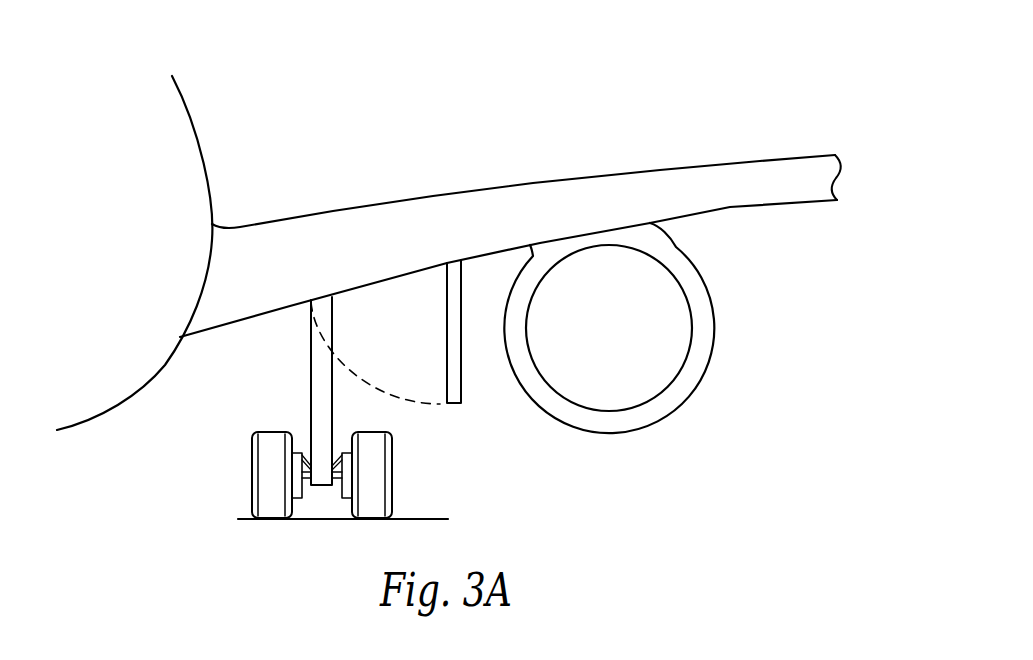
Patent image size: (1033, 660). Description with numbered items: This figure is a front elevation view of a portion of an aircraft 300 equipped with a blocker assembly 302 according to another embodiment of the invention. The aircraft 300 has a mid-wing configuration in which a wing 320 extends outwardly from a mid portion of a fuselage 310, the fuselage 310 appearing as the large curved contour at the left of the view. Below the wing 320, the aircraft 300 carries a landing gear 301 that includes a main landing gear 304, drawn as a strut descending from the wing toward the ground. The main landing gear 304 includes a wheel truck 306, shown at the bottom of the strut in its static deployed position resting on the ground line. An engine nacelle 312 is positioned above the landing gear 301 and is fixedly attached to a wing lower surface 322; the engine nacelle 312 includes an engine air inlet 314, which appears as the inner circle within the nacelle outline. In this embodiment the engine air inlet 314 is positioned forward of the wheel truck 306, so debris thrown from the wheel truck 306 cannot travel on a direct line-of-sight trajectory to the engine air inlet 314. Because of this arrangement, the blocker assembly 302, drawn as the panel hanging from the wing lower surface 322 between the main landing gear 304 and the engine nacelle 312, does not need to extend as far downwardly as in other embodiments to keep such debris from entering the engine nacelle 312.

The aircraft 300 is at (449, 230).
The landing gear 301 is at (339, 408).
The blocker assembly 302 is at (470, 395).
The main landing gear 304 is at (278, 401).
The wheel truck 306 is at (250, 470).
The fuselage 310 is at (188, 98).
The engine nacelle 312 is at (656, 334).
The engine air inlet 314 is at (632, 383).
The wing 320 is at (687, 164).
The wing lower surface 322 is at (730, 208).